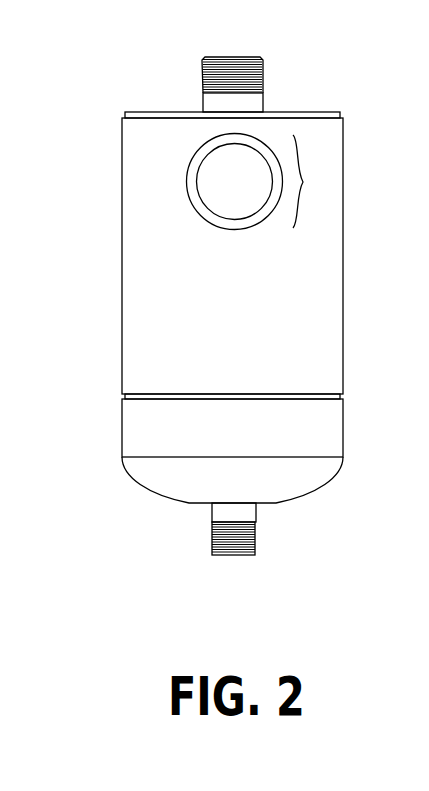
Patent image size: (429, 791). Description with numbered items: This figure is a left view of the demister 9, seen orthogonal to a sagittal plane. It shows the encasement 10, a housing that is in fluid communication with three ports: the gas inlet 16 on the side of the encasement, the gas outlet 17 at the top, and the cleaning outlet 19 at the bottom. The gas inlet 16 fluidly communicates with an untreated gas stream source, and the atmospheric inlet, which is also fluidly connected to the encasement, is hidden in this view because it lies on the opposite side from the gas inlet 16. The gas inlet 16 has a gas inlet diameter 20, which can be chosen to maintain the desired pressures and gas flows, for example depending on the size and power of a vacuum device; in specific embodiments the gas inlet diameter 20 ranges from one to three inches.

The demister 9 is at (220, 309).
The encasement 10 is at (121, 143).
The gas inlet 16 is at (255, 172).
The gas outlet 17 is at (220, 58).
The cleaning outlet 19 is at (240, 557).
The gas inlet diameter 20 is at (303, 182).